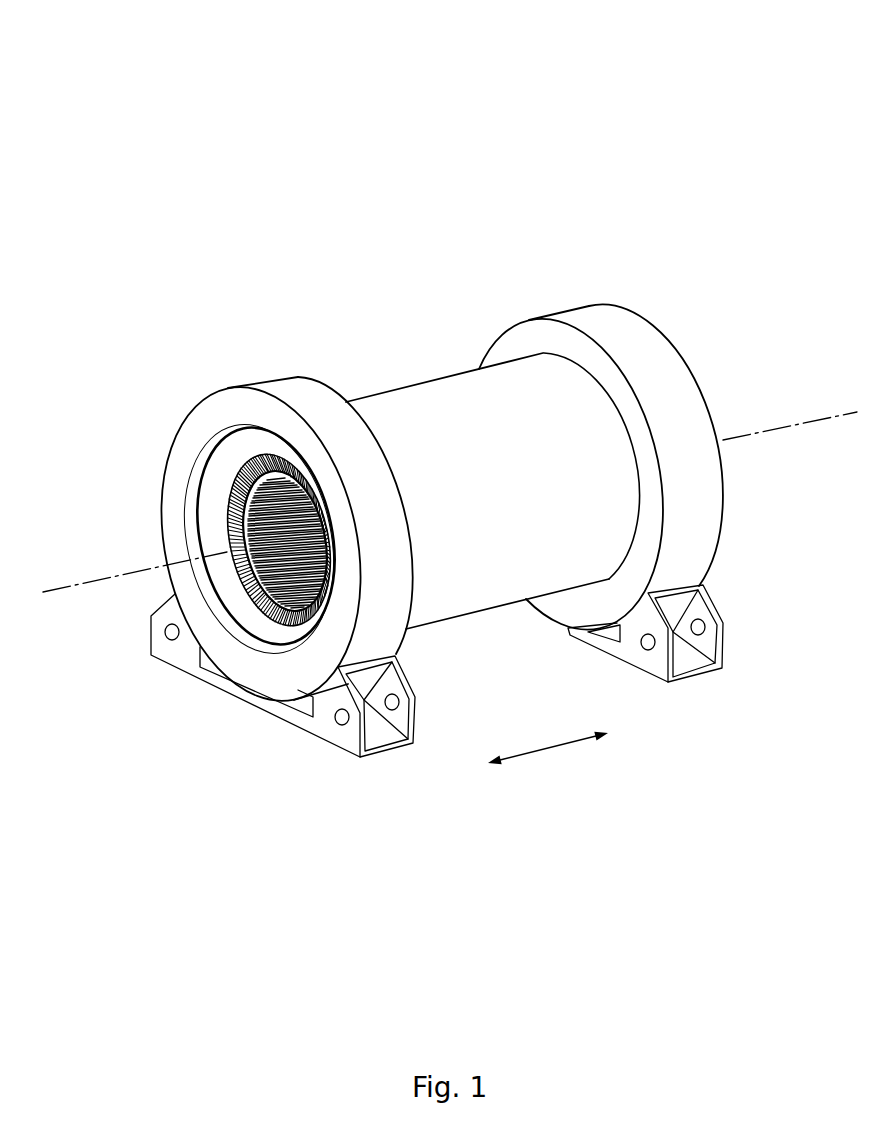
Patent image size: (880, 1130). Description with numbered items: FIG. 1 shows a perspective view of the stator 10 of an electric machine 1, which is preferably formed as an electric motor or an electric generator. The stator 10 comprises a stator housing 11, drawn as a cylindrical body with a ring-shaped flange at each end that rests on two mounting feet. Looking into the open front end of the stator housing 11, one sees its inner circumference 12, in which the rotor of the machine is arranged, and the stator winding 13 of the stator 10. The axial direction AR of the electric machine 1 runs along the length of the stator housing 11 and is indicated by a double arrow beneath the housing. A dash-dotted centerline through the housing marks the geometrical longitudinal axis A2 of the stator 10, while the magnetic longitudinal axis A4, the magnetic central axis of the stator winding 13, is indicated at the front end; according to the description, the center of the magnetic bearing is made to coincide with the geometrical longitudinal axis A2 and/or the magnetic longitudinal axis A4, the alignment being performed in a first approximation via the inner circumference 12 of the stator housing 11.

The electric machine 1 is at (681, 97).
The stator 10 is at (530, 206).
The stator housing 11 is at (460, 388).
The inner circumference 12 is at (253, 617).
The stator winding 13 is at (221, 529).
The geometrical longitudinal axis A2 is at (835, 415).
The magnetic longitudinal axis A4 is at (112, 573).
The axial direction AR is at (548, 741).